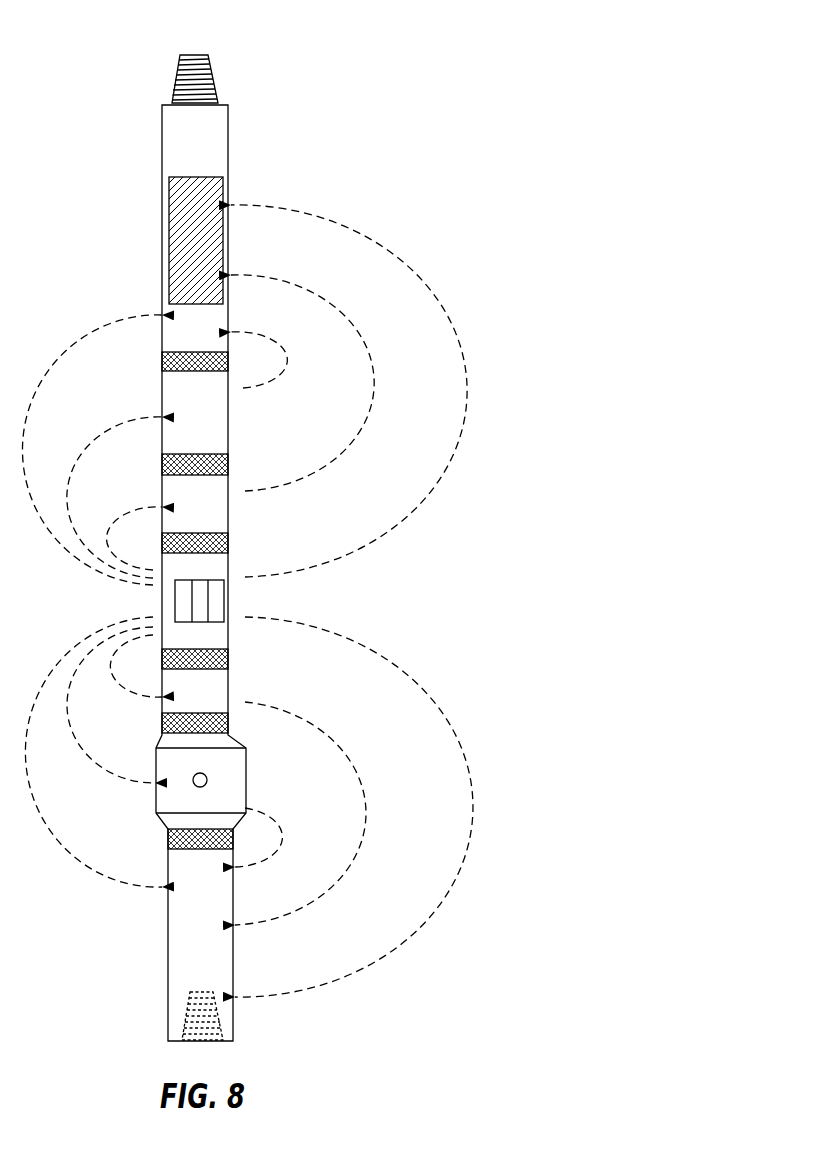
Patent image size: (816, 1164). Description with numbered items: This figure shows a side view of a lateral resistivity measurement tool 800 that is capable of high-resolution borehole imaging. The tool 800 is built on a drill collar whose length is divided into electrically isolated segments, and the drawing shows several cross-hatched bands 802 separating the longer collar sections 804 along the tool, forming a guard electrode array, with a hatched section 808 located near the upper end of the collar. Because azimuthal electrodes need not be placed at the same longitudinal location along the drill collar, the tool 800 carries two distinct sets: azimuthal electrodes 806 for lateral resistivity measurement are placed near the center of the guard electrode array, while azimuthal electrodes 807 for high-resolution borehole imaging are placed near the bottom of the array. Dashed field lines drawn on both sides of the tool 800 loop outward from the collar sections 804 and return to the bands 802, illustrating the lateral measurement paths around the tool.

The tool 800 is at (370, 50).
The magnets 802 is at (172, 362).
The tool body / housing 804 is at (228, 143).
The azimuthal electrodes 806 is at (217, 610).
The azimuthal electrodes 807 is at (208, 780).
The electronics section 808 is at (170, 240).